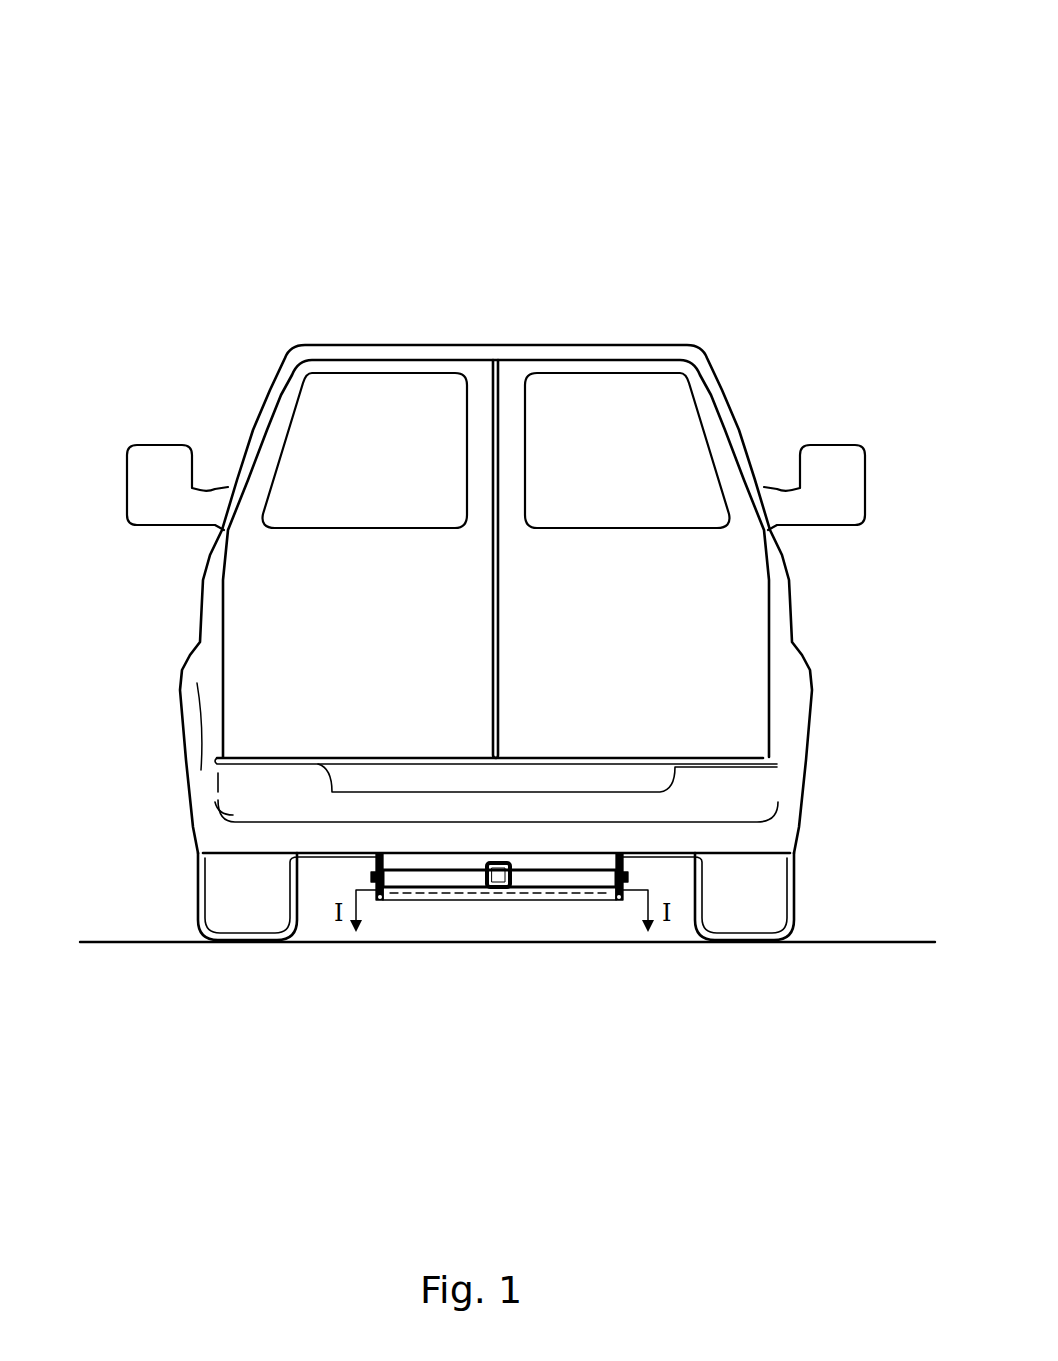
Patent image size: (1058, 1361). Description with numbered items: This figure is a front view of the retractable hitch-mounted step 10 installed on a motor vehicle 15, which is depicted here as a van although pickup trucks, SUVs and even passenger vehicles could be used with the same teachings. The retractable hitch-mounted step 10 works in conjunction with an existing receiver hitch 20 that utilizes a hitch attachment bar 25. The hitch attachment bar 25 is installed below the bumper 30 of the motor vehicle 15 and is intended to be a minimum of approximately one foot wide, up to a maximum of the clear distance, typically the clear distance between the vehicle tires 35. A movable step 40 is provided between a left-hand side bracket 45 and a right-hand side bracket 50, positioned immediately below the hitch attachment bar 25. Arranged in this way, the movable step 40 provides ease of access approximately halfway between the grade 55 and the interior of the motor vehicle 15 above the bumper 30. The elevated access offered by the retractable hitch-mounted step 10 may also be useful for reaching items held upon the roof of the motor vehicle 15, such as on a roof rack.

The retractable hitch-mounted step 10 is at (97, 176).
The motor vehicle 15 is at (190, 660).
The receiver hitch 20 is at (493, 887).
The hitch attachment bar 25 is at (435, 878).
The bumper 30 is at (215, 794).
The vehicle tires 35 is at (203, 893).
The movable step 40 is at (415, 900).
The left-hand side bracket 45 is at (378, 857).
The right-hand side bracket 50 is at (617, 853).
The grade 55 is at (565, 943).